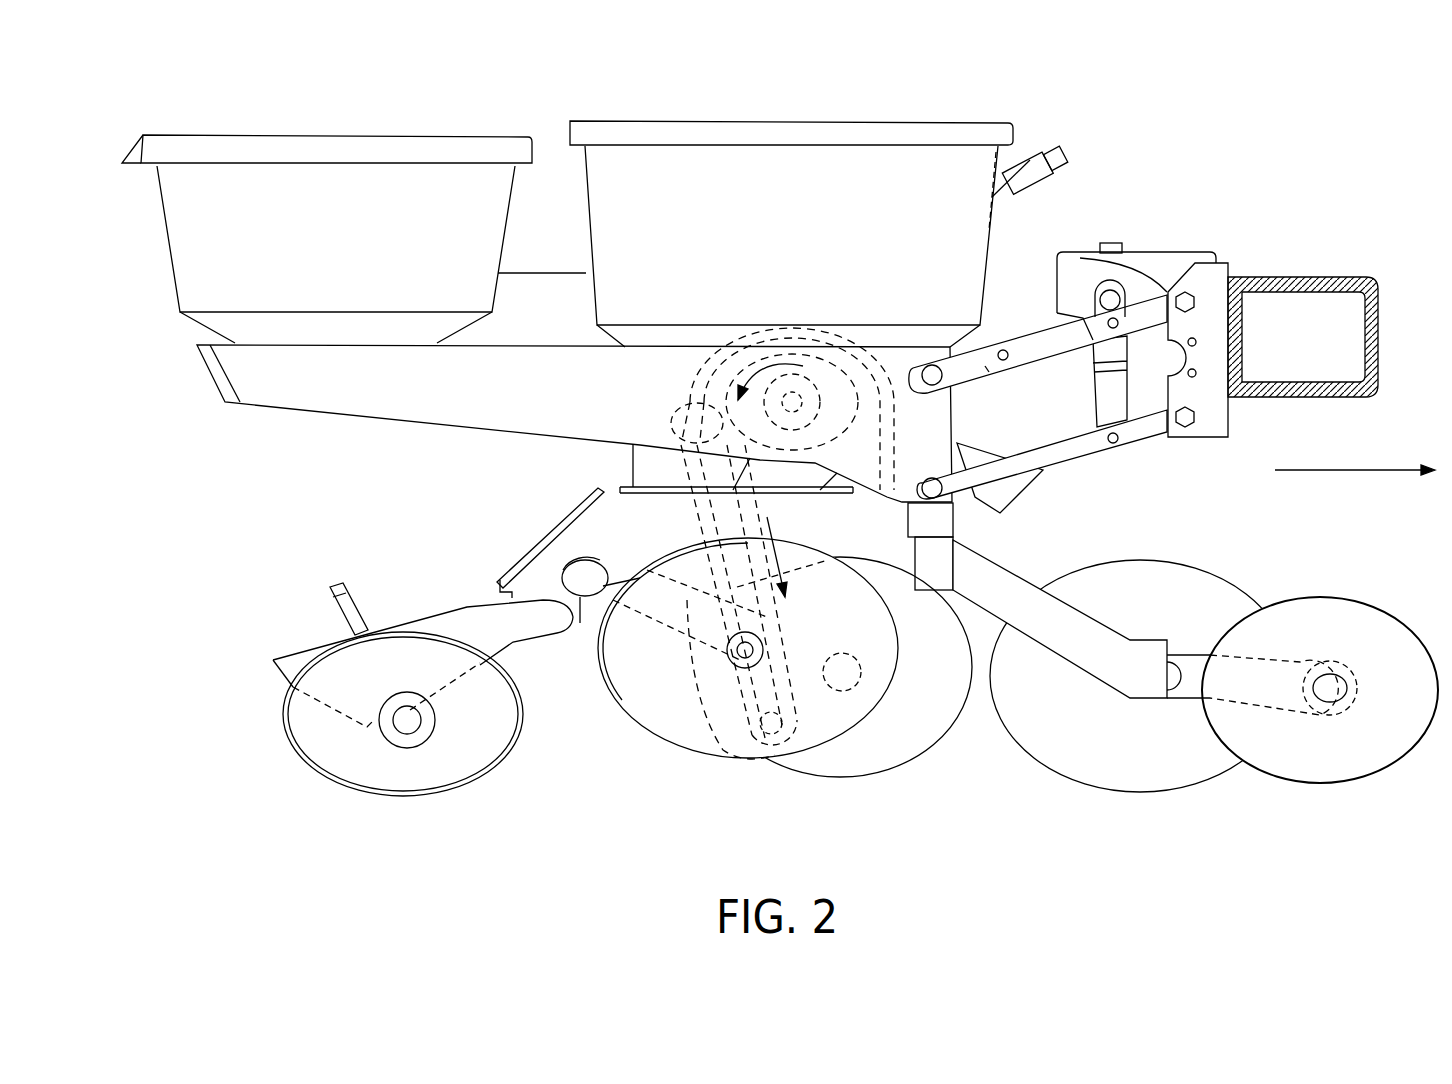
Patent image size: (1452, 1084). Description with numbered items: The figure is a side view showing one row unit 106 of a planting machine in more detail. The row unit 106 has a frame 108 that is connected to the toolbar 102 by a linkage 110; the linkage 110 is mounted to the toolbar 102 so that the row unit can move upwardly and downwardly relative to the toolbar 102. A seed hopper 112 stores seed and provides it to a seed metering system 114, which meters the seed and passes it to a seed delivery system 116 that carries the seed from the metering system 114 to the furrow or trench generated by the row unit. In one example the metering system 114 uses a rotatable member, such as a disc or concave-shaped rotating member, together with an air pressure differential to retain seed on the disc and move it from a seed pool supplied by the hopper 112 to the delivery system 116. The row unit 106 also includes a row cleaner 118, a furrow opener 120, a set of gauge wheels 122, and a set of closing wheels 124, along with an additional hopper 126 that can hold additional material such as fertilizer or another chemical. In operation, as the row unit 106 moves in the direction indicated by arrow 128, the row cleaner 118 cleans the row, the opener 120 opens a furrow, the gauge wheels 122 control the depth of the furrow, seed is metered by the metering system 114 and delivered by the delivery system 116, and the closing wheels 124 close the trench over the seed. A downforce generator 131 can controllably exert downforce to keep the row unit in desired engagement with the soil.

The toolbar 102 is at (1375, 298).
The row unit 106 is at (1102, 180).
The frame 108 is at (553, 545).
The linkage 110 is at (995, 325).
The seed hopper 112 is at (851, 226).
The seed metering system 114 is at (832, 365).
The seed delivery system 116 is at (700, 462).
The row cleaner 118 is at (1147, 547).
The furrow opener 120 is at (912, 735).
The gauge wheels 122 is at (663, 715).
The closing wheels 124 is at (328, 766).
The additional hopper 126 is at (296, 240).
The arrow 128 is at (1313, 476).
The downforce generator 131 is at (1153, 222).